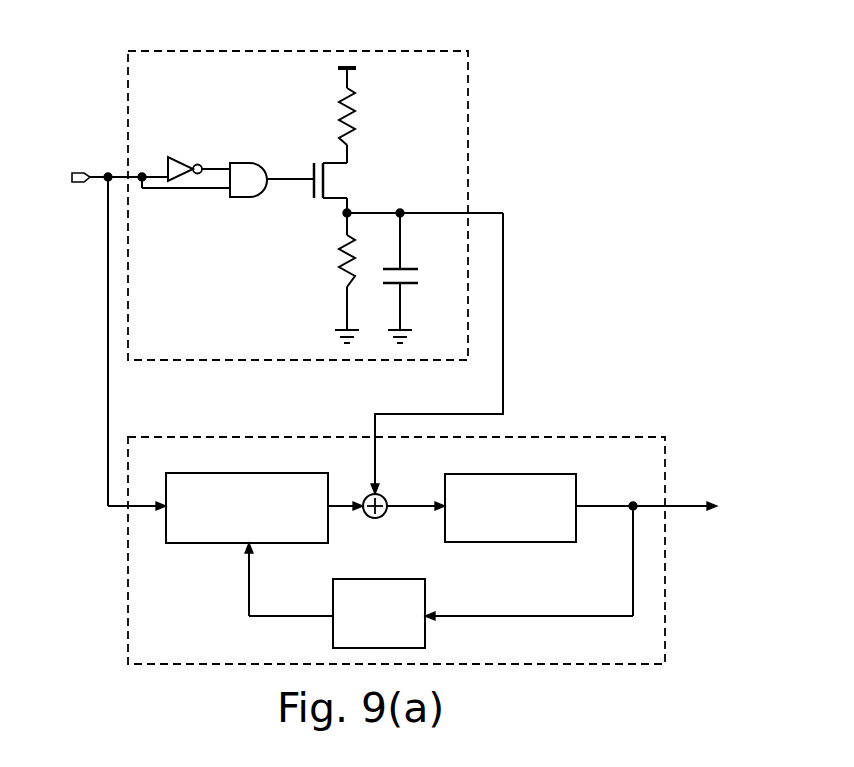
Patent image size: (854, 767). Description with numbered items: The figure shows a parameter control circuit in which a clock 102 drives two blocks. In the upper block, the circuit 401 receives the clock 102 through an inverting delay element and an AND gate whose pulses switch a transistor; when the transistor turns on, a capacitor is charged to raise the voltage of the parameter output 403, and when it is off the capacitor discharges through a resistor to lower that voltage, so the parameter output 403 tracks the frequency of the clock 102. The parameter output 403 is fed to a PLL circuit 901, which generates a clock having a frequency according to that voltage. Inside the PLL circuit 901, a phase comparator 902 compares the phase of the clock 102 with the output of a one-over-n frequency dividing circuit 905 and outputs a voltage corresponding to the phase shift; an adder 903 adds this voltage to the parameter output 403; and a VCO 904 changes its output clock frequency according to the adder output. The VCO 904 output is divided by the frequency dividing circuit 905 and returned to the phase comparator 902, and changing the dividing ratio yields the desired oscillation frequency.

The clock 102 is at (77, 184).
The circuit 401 is at (203, 51).
The parameter output 403 is at (503, 305).
The PLL circuit 901 is at (422, 530).
The phase comparator 902 is at (210, 545).
The adder 903 is at (386, 496).
The VCO 904 is at (577, 492).
The 1/n frequency dividing circuit 905 is at (427, 598).